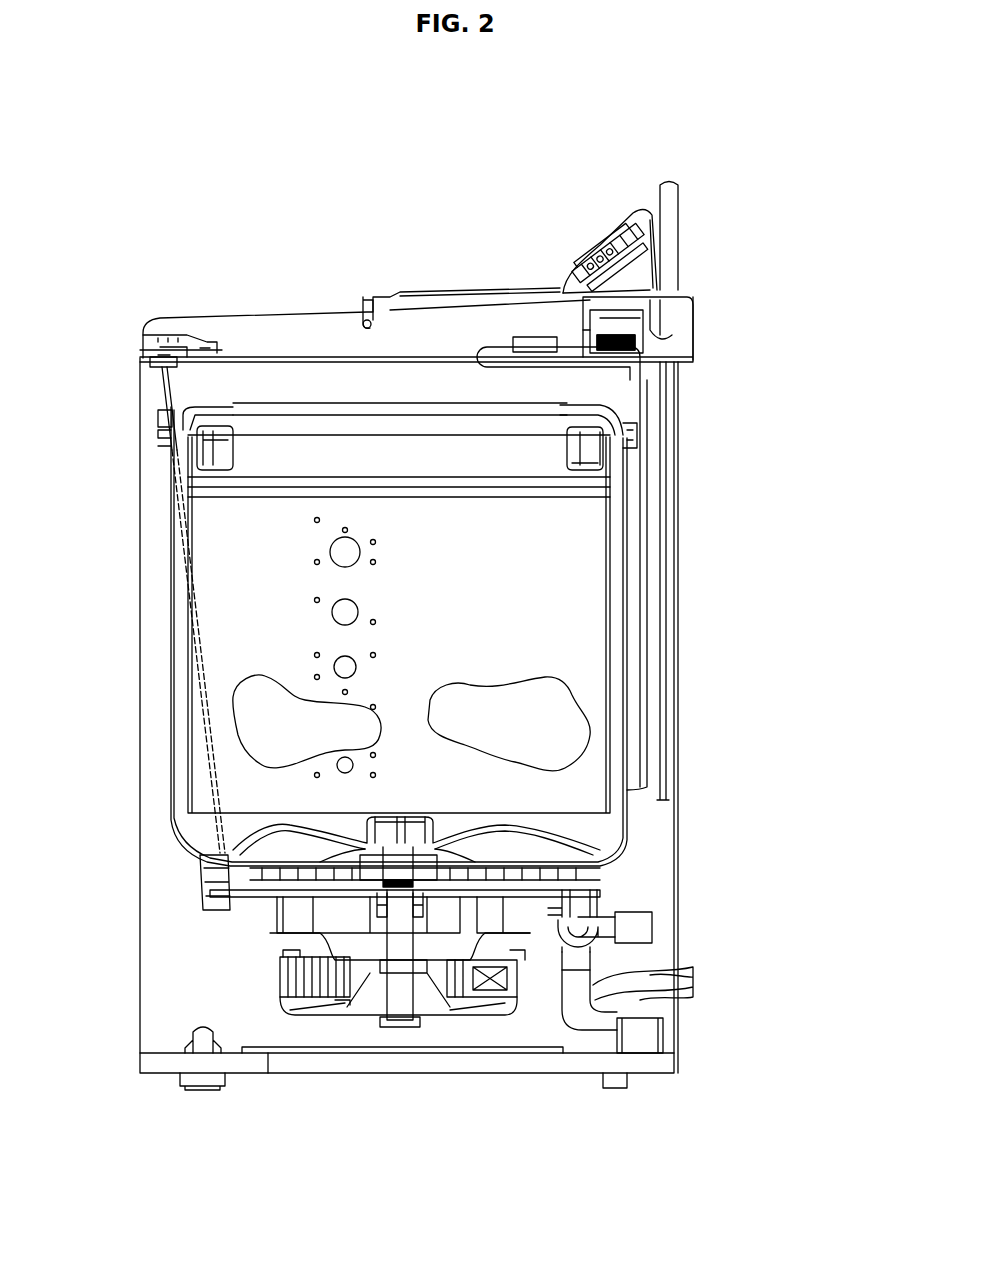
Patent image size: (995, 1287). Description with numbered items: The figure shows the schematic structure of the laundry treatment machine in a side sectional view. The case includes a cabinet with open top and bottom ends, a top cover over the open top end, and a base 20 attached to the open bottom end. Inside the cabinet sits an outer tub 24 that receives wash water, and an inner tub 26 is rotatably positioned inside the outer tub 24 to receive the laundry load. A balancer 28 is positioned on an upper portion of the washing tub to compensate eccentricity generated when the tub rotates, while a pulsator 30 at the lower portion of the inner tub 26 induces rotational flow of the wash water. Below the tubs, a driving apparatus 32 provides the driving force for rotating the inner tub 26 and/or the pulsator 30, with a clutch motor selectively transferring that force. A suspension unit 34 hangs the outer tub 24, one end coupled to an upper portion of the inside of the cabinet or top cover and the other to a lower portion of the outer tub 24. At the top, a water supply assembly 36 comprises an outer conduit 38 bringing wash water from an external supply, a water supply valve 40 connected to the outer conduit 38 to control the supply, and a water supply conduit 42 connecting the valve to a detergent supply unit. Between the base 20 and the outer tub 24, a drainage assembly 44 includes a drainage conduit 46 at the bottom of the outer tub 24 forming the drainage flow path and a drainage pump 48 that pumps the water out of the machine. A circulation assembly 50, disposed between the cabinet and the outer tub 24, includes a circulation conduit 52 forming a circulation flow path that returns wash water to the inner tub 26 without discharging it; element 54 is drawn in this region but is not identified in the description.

The base 20 is at (557, 1067).
The outer tub 24 is at (627, 615).
The inner tub 26 is at (612, 655).
The balancer 28 is at (593, 450).
The pulsator 30 is at (524, 848).
The driving apparatus 32 is at (447, 990).
The suspension unit 34 is at (153, 367).
The water supply assembly 36 is at (693, 452).
The outer conduit 38 is at (667, 215).
The water supply valve 40 is at (690, 299).
The water supply conduit 42 is at (688, 300).
The drainage assembly 44 is at (691, 918).
The drainage conduit 46 is at (640, 1000).
The drainage pump 48 is at (643, 1037).
The circulation assembly 50 is at (580, 1000).
The circulation conduit 52 is at (597, 928).
The drain valve 54 is at (632, 932).